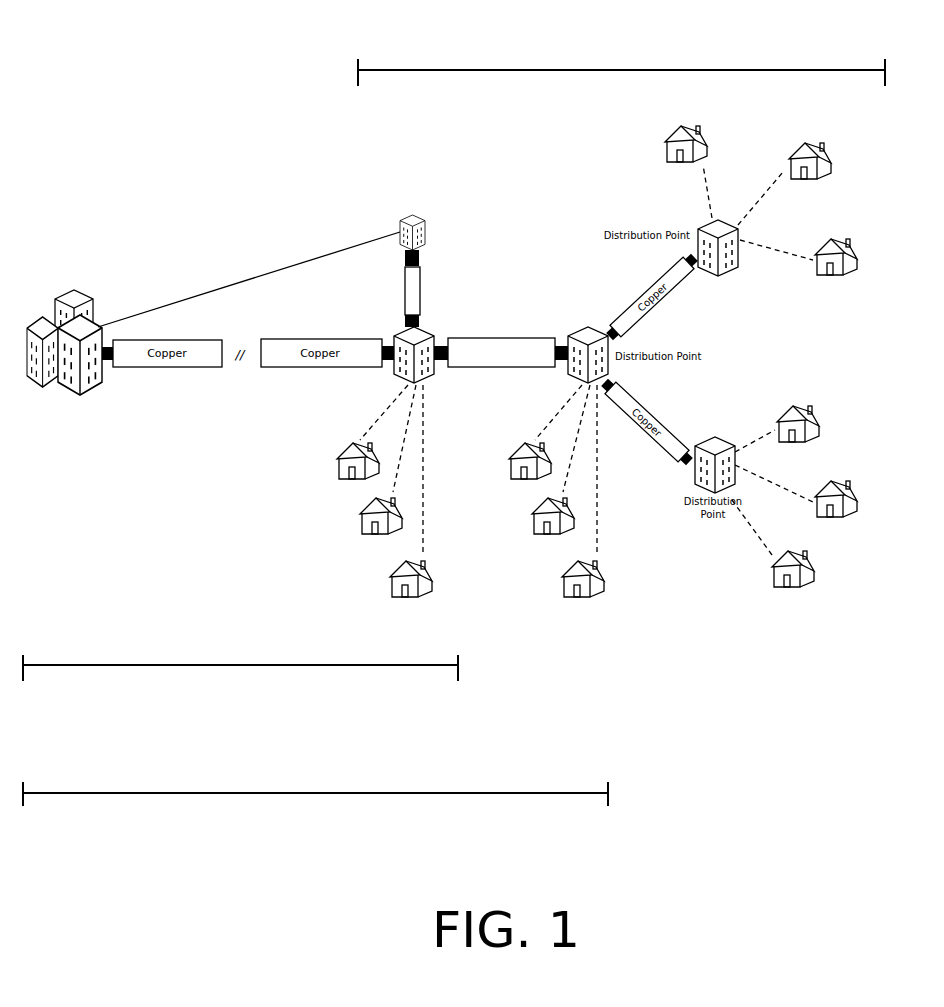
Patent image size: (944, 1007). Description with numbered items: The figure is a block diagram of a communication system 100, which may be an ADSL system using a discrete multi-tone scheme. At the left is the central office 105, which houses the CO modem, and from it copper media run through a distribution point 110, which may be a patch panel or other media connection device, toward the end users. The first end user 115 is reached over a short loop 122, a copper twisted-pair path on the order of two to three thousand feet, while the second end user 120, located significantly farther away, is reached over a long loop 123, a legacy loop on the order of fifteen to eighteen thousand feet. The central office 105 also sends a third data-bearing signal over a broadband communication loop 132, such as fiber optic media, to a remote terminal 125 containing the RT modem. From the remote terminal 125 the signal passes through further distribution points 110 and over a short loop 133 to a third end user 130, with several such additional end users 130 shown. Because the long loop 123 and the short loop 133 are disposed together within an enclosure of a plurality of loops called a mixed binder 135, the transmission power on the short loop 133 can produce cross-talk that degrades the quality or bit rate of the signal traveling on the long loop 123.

The communication system 100 is at (120, 90).
The central office 105 is at (68, 290).
The distribution point 110 is at (422, 332).
The first end user 115 is at (395, 590).
The second end user 120 is at (568, 590).
The short loop 122 is at (240, 694).
The long loop 123 is at (315, 822).
The remote terminal 125 is at (425, 228).
The third end user 130 is at (672, 150).
The broadband communication loop 132 is at (248, 280).
The short loop 133 is at (621, 55).
The mixed binder 135 is at (510, 368).